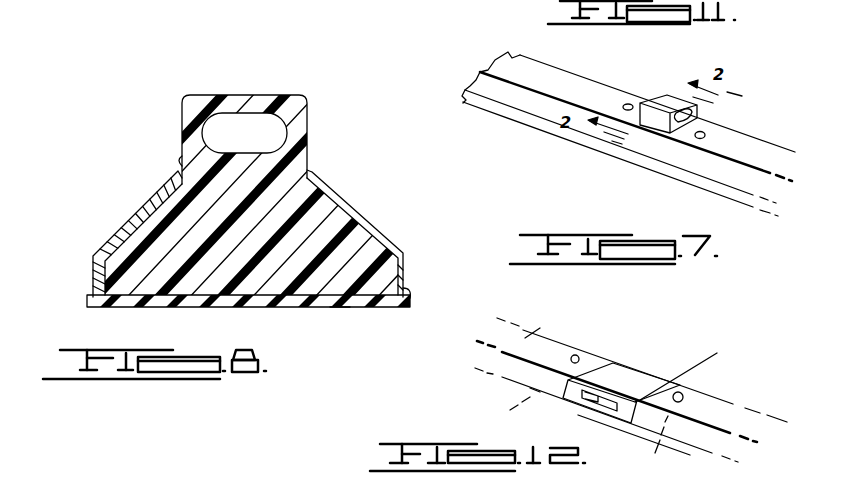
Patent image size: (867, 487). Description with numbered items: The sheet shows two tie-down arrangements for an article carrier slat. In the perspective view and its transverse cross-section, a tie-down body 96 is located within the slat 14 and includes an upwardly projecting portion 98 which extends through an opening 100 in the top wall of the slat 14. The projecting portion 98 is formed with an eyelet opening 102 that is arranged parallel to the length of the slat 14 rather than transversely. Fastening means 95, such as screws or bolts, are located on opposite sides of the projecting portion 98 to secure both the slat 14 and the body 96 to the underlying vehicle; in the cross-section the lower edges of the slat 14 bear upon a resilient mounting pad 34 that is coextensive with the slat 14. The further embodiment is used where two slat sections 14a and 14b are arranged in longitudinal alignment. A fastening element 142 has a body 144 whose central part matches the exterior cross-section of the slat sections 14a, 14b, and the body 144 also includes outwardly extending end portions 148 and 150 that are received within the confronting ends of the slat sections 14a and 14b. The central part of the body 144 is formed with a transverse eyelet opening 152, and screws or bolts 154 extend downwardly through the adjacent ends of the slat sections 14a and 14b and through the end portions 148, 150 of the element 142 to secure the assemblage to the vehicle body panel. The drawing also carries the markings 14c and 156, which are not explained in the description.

In FIG. 8, the slat 14 is at (355, 203).
In FIG. 7, the slat 14 is at (480, 84).
In FIG. 12, the slat section 14a is at (737, 401).
In FIG. 12, the slat section 14b is at (532, 335).
In FIG. 12, the rail edge 14c is at (652, 377).
In FIG. 8, the mounting pad 34 is at (118, 307).
In FIG. 7, the fastening means 95 is at (628, 103).
In FIG. 8, the tie-down body 96 is at (346, 303).
In FIG. 8, the upwardly projecting portion 98 is at (308, 170).
In FIG. 7, the upwardly projecting portion 98 is at (663, 100).
In FIG. 8, the opening 100 is at (182, 162).
In FIG. 8, the eyelet opening 102 is at (246, 117).
In FIG. 7, the eyelet opening 102 is at (700, 122).
In FIG. 12, the fastening element 142 is at (627, 362).
In FIG. 12, the body 144 is at (618, 418).
In FIG. 12, the end portion 148 is at (523, 398).
In FIG. 12, the end portion 150 is at (657, 453).
In FIG. 12, the transverse eyelet opening 152 is at (587, 402).
In FIG. 12, the screws or bolts 154 is at (684, 393).
In FIG. 12, the hole 156 is at (580, 355).